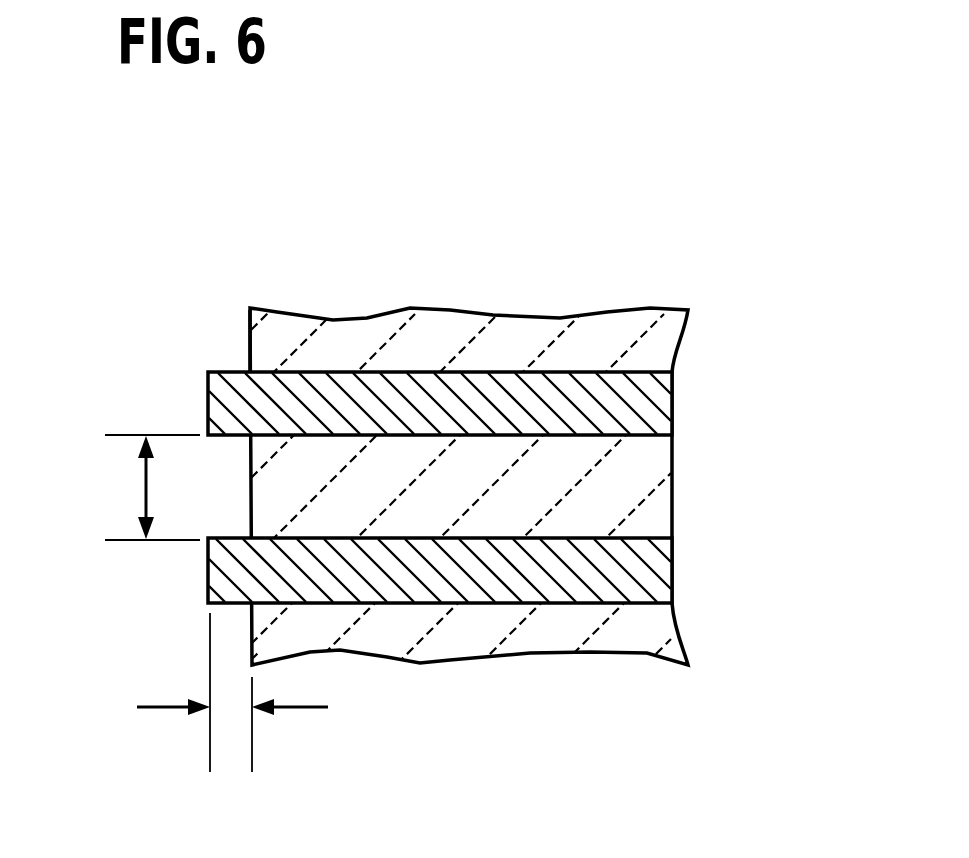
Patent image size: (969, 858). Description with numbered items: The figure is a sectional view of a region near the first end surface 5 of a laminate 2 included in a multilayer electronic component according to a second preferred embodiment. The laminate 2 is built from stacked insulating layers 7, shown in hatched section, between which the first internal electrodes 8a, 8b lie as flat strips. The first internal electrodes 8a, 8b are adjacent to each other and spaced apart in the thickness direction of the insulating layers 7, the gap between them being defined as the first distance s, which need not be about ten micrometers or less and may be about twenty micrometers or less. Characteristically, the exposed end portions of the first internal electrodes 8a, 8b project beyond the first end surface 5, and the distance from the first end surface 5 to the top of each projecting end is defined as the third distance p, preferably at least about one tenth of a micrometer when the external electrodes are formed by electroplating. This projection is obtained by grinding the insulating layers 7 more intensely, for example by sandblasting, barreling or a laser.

The laminate 2 is at (605, 316).
The first end surface 5 is at (250, 342).
The insulating layers 7 is at (575, 530).
The first internal electrode 8a is at (657, 400).
The first internal electrode 8b is at (657, 572).
The first distance s is at (143, 488).
The third distance p is at (157, 707).